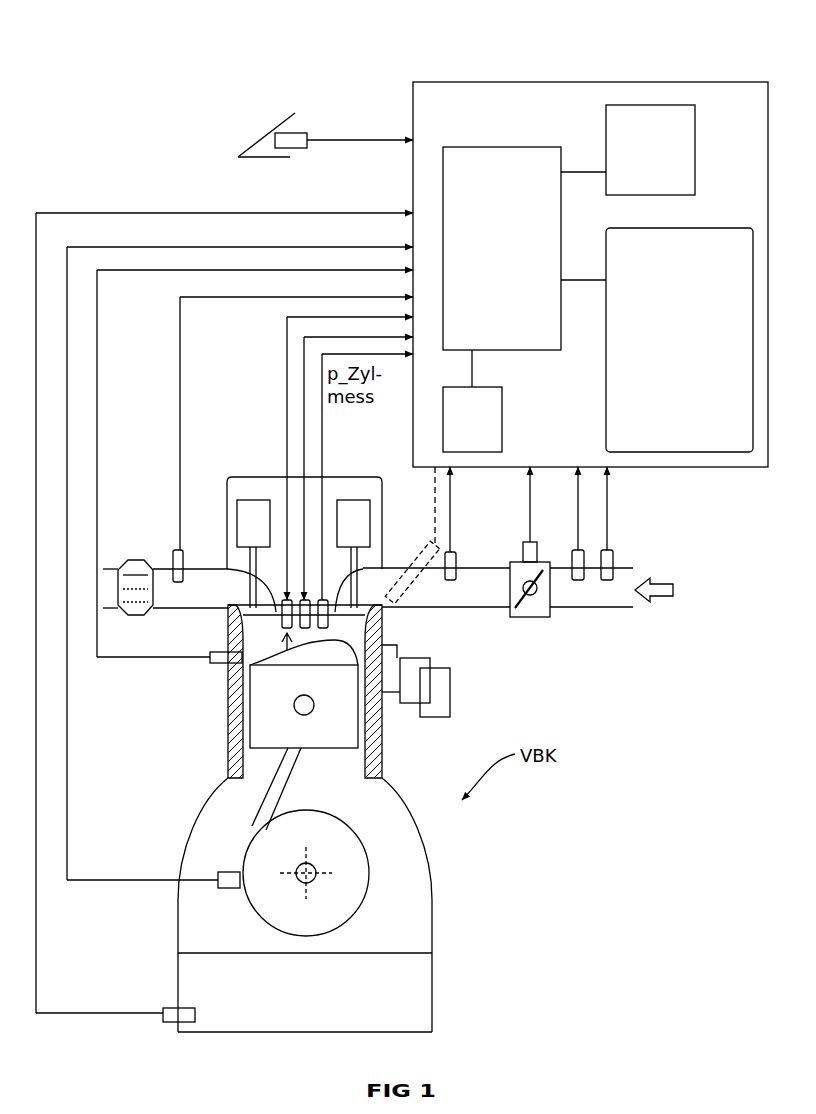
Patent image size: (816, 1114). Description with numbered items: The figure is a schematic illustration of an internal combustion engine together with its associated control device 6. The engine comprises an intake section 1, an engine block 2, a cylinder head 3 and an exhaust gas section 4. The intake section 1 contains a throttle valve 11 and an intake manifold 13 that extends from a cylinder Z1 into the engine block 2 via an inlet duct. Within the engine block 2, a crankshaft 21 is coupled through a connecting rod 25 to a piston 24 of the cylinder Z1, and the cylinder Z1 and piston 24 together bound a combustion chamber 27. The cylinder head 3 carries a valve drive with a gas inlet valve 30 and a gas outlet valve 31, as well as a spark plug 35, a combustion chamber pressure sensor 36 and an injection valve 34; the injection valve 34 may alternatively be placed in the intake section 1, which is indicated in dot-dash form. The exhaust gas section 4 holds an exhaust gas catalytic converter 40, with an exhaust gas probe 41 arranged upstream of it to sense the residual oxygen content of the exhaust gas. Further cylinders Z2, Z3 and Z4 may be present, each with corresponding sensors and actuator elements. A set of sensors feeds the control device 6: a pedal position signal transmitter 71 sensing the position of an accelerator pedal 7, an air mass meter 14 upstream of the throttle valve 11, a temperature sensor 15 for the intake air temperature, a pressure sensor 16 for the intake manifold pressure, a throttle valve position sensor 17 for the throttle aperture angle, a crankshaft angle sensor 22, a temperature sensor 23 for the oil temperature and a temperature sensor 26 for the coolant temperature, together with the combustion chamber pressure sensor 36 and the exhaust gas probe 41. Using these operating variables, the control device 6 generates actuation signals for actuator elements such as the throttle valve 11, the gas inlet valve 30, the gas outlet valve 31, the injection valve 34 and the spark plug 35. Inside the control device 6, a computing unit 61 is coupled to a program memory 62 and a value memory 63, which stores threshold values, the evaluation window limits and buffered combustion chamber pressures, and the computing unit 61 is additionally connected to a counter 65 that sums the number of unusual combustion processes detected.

The intake section 1 is at (539, 636).
The engine block 2 is at (211, 718).
The cylinder head 3 is at (354, 467).
The exhaust gas section 4 is at (180, 590).
The control device 6 is at (437, 93).
The accelerator pedal 7 is at (262, 128).
The throttle valve 11 is at (541, 618).
The intake manifold 13 is at (490, 598).
The air mass meter 14 is at (613, 552).
The temperature sensor 15 is at (578, 548).
The pressure sensor 16 is at (457, 566).
The throttle valve position sensor 17 is at (522, 542).
The crankshaft 21 is at (312, 881).
The crankshaft angle sensor 22 is at (232, 872).
The temperature sensor 23 is at (168, 1023).
The piston 24 is at (248, 740).
The connecting rod 25 is at (290, 782).
The temperature sensor 26 is at (215, 664).
The combustion chamber 27 is at (256, 628).
The gas inlet valve 30 is at (362, 525).
The gas outlet valve 31 is at (252, 510).
The injection valve 34 is at (284, 600).
The spark plug 35 is at (305, 598).
The combustion chamber pressure sensor 36 is at (323, 598).
The exhaust gas catalytic converter 40 is at (133, 620).
The exhaust gas probe 41 is at (173, 556).
The computing unit 61 is at (458, 160).
The program memory 62 is at (692, 104).
The value memory 63 is at (640, 228).
The counter 65 is at (487, 425).
The pedal position signal transmitter 71 is at (300, 132).
The cylinder Z1 is at (383, 745).
The cylinder Z2 is at (440, 698).
The cylinder Z3 is at (425, 665).
The cylinder Z4 is at (403, 650).